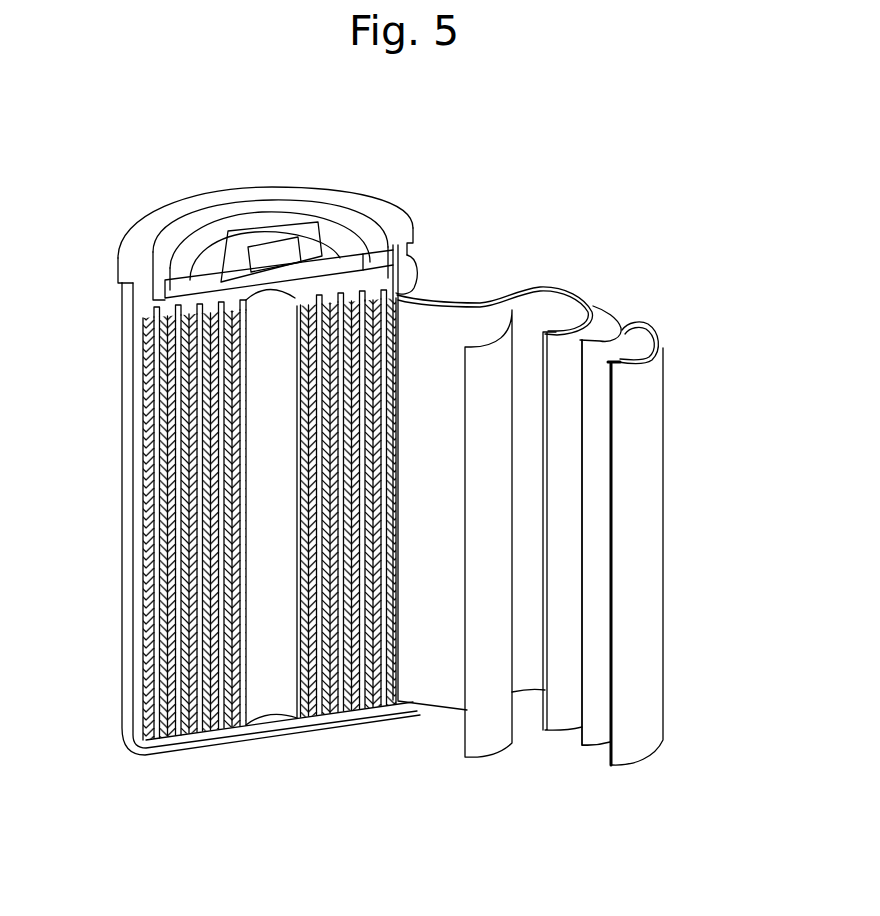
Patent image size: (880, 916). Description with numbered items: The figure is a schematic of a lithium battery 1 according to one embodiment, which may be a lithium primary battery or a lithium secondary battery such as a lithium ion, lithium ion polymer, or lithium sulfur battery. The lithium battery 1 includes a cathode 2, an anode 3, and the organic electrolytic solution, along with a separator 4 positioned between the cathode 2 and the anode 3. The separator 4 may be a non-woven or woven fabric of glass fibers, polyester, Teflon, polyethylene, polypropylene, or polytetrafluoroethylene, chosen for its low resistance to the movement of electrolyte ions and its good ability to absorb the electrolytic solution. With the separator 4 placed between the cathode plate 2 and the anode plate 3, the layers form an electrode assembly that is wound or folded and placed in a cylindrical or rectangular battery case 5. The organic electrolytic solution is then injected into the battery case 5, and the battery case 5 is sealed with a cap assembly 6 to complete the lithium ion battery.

The lithium battery 1 is at (630, 265).
The cathode 2 is at (650, 425).
The anode 3 is at (560, 342).
The separator 4 is at (618, 343).
The battery case 5 is at (124, 690).
The cap assembly 6 is at (280, 226).